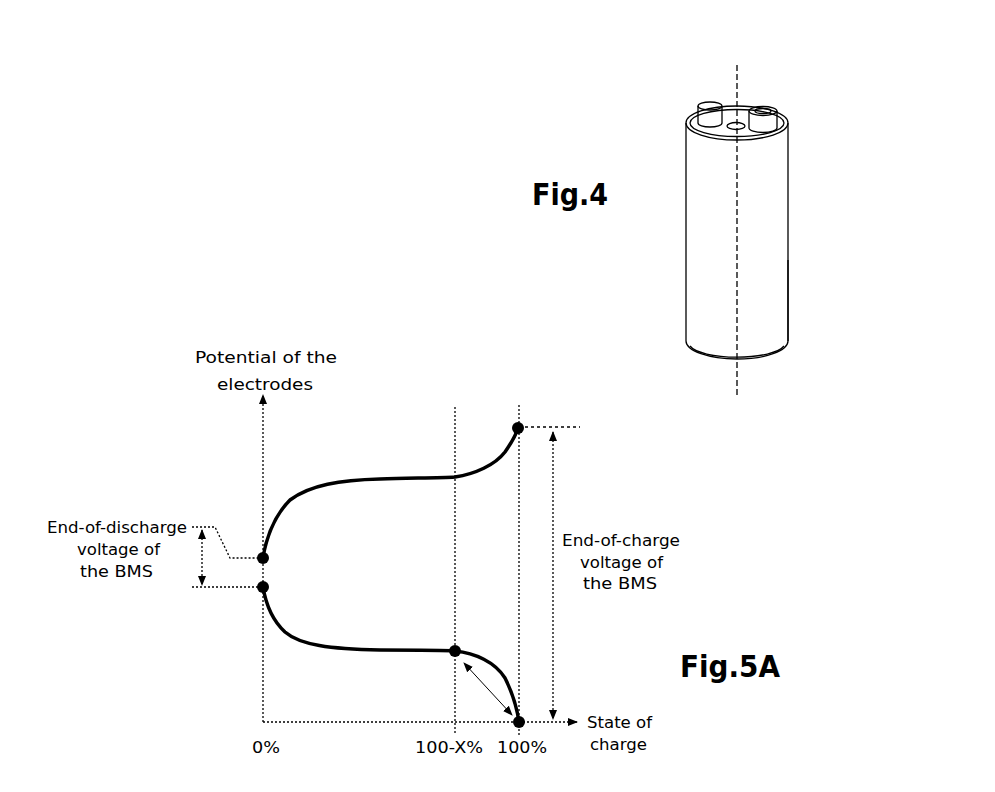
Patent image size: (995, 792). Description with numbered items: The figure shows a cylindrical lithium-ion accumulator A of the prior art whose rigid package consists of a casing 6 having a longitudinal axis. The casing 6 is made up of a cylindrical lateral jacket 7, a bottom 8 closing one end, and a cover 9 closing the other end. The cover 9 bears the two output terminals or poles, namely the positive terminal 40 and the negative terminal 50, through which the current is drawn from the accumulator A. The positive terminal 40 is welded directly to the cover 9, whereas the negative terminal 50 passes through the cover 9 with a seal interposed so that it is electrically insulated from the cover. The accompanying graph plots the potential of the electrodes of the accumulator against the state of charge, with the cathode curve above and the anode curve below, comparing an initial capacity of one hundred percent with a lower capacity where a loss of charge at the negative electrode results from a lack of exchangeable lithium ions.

The lithium-ion accumulator A is at (712, 232).
The casing 6 is at (780, 222).
The cylindrical lateral jacket 7 is at (787, 287).
The bottom 8 is at (705, 356).
The cover 9 is at (782, 108).
The positive terminal 40 is at (705, 125).
The negative terminal 50 is at (766, 132).